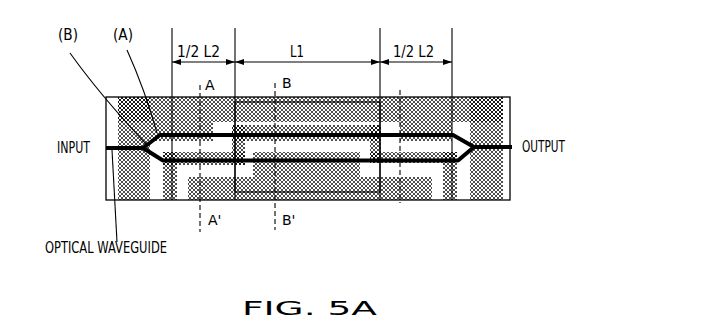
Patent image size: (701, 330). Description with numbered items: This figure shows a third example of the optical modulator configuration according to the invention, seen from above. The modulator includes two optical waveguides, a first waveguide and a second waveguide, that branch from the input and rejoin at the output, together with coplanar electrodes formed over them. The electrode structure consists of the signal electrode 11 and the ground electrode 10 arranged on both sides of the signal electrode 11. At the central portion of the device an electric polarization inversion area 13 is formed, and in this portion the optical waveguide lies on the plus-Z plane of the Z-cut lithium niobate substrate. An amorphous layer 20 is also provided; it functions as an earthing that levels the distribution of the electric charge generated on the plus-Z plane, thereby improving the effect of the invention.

The ground electrode 10 is at (482, 198).
The signal electrode 11 is at (172, 193).
The electric polarization inversion area 13 is at (317, 188).
The amorphous layer 20 is at (383, 118).